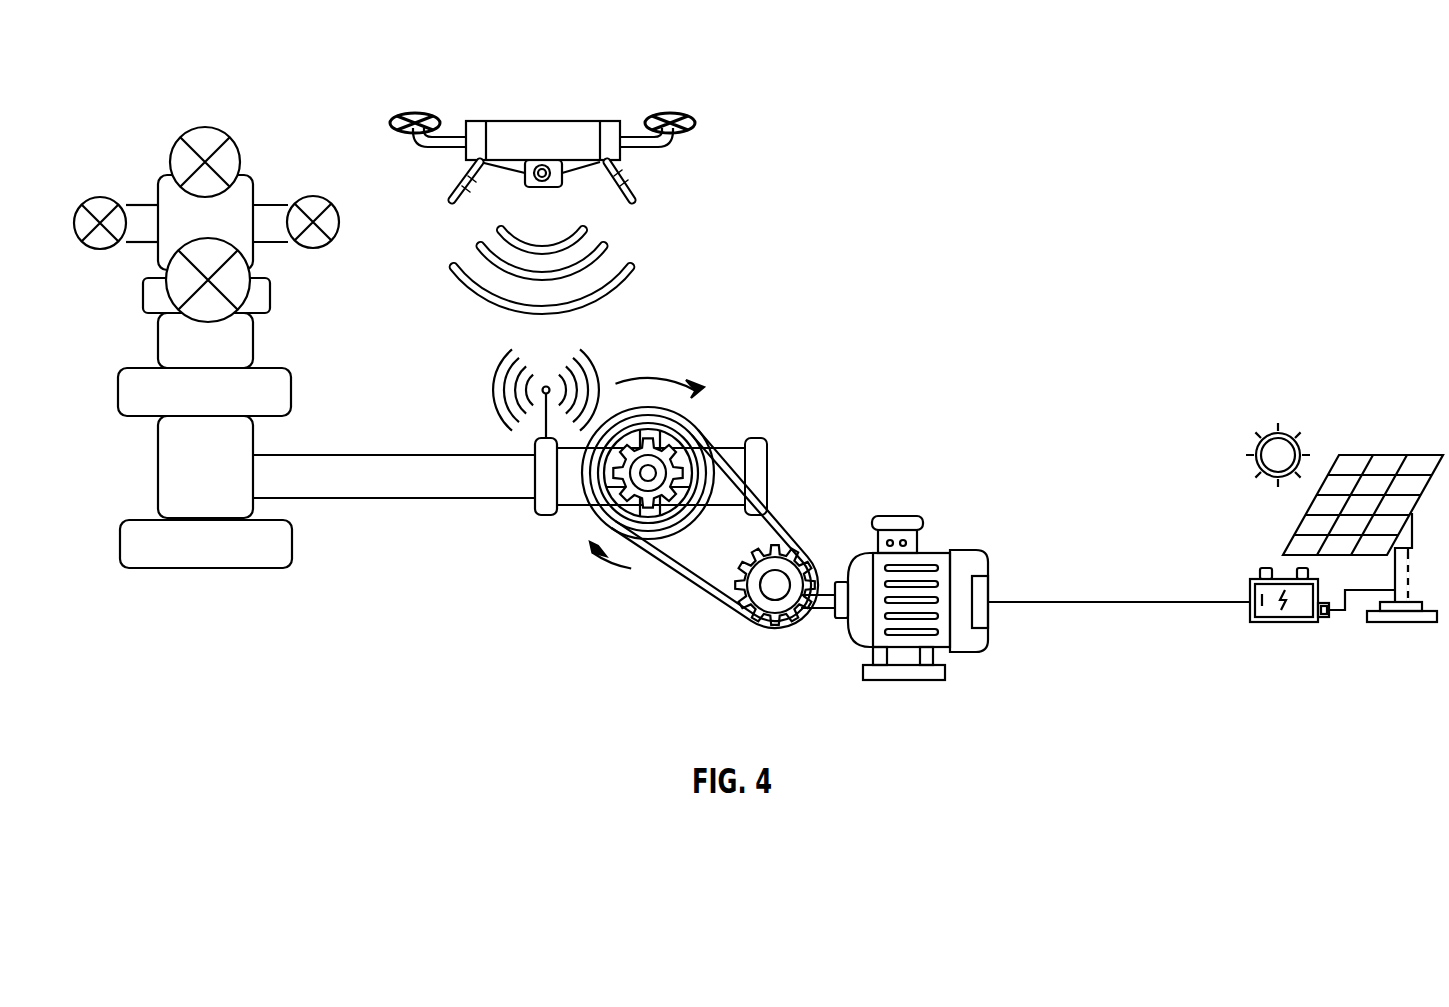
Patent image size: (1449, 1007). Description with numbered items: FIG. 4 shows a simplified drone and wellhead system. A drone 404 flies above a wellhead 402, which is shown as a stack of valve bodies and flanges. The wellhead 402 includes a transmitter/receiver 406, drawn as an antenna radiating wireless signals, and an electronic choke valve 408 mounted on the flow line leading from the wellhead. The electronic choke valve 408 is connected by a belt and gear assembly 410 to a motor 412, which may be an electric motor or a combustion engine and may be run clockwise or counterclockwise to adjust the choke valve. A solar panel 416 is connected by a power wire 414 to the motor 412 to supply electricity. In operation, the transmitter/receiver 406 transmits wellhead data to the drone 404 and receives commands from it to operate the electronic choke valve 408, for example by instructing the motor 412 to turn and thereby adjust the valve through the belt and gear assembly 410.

The wellhead 402 is at (207, 128).
The drone 404 is at (543, 120).
The transmitter/receiver 406 is at (492, 390).
The electronic choke valve 408 is at (693, 425).
The belt and gear assembly 410 is at (700, 582).
The motor 412 is at (906, 681).
The power wire 414 is at (1120, 602).
The solar panel 416 is at (1288, 545).